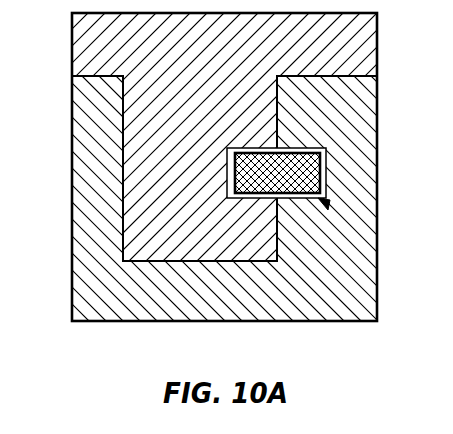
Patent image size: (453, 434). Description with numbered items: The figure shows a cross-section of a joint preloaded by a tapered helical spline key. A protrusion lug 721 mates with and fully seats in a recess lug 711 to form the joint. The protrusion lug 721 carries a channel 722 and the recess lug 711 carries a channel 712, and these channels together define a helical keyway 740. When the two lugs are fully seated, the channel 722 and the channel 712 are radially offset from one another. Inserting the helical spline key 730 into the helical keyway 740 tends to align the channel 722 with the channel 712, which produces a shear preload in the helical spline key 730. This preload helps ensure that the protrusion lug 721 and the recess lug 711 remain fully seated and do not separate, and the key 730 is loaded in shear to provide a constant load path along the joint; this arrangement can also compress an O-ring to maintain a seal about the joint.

The recess lug 711 is at (96, 152).
The protrusion lug 721 is at (148, 101).
The channel 722 is at (225, 185).
The channel 712 is at (326, 185).
The helical spline key 730 is at (320, 167).
The helical keyway 740 is at (328, 206).